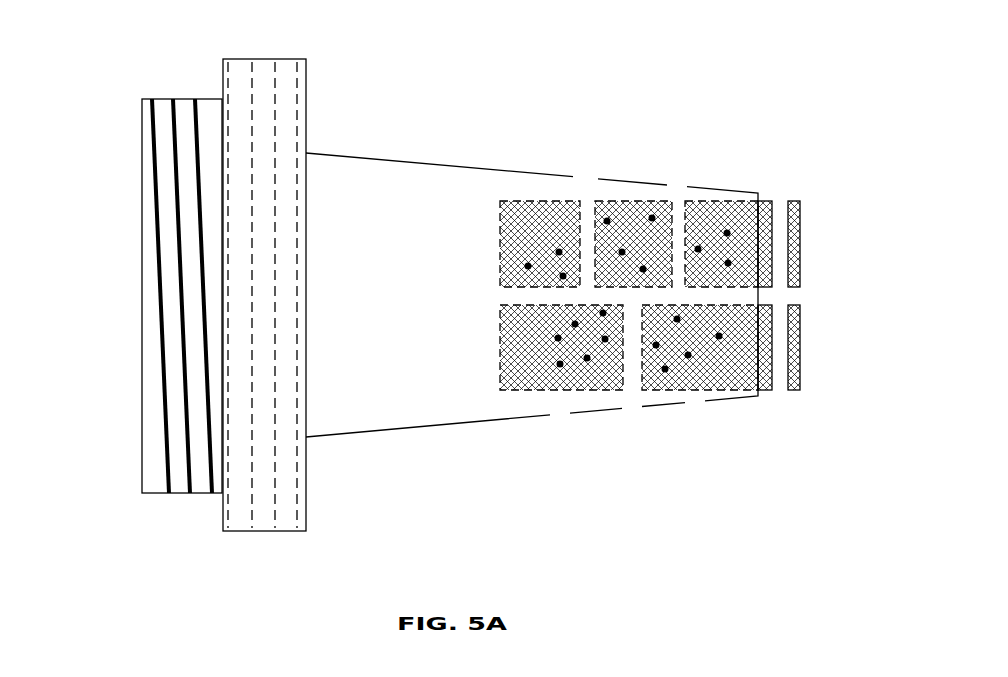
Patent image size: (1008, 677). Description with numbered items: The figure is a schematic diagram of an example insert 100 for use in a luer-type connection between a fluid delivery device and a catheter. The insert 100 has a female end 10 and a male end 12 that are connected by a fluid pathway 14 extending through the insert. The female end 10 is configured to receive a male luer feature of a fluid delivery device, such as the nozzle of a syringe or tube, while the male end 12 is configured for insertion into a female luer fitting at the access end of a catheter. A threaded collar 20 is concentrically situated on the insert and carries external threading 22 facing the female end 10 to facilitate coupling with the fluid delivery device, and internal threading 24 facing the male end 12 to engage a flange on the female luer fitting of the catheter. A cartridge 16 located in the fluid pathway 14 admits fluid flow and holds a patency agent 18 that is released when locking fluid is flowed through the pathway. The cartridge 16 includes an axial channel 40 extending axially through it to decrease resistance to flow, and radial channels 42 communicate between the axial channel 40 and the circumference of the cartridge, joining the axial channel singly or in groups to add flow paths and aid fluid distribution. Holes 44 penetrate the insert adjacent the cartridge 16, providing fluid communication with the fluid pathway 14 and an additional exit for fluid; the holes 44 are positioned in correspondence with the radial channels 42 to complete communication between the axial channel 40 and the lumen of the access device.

The female end 10 is at (129, 318).
The male end 12 is at (793, 299).
The fluid pathway 14 is at (401, 307).
The cartridge 16 is at (503, 252).
The patency agent 18 is at (548, 240).
The threaded collar 20 is at (222, 502).
The external threading 22 is at (195, 97).
The internal threading 24 is at (272, 80).
The axial channel 40 is at (790, 298).
The radial channels 42 is at (780, 208).
The holes 44 is at (678, 188).
The insert 100 is at (594, 211).